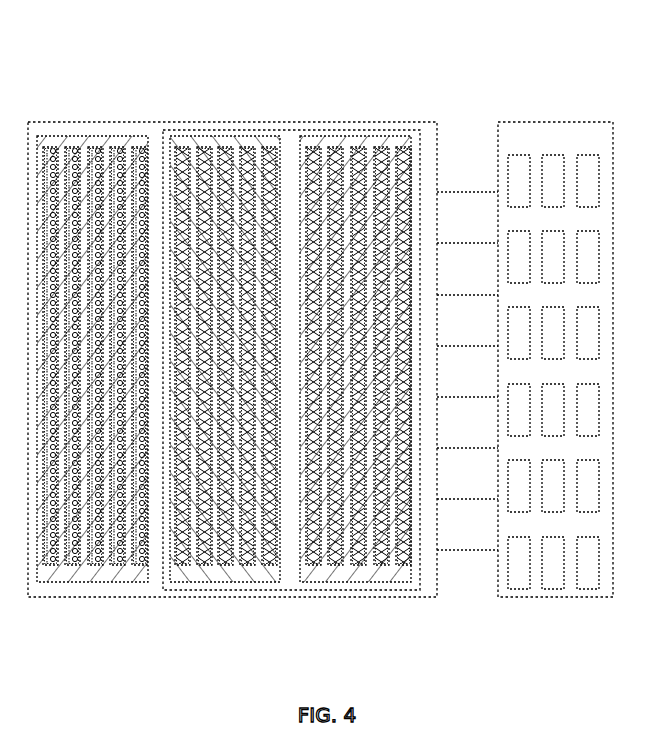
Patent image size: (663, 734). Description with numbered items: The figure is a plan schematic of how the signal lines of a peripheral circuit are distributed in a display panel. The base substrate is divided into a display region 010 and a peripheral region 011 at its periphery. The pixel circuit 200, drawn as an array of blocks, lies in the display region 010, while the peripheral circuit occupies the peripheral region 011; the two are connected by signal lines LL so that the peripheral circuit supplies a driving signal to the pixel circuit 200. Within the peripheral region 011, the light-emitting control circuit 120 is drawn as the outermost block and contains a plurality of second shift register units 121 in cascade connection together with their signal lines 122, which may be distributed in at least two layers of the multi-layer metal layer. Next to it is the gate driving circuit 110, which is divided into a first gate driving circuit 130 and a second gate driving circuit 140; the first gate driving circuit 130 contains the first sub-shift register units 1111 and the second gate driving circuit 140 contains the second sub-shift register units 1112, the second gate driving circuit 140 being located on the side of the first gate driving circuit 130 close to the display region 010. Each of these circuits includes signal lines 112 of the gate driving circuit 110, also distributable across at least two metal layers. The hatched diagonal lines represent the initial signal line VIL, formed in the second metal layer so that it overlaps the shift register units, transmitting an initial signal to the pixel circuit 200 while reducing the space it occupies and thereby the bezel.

The peripheral region 011 is at (277, 612).
The display region 010 is at (545, 612).
The pixel circuit 200 is at (555, 158).
The signal lines LL is at (483, 192).
The light-emitting control circuit 120 is at (138, 74).
The second shift register units 121 is at (91, 140).
The signal lines of the light-emitting control circuit 122 is at (121, 140).
The gate driving circuit 110 is at (356, 42).
The first gate driving circuit 130 is at (260, 74).
The first sub-shift register unit 1111 is at (220, 140).
The signal lines of the gate driving circuit 112 is at (250, 140).
The second gate driving circuit 140 is at (395, 74).
The second sub-shift register unit 1112 is at (353, 140).
The initial signal line VIL is at (410, 148).